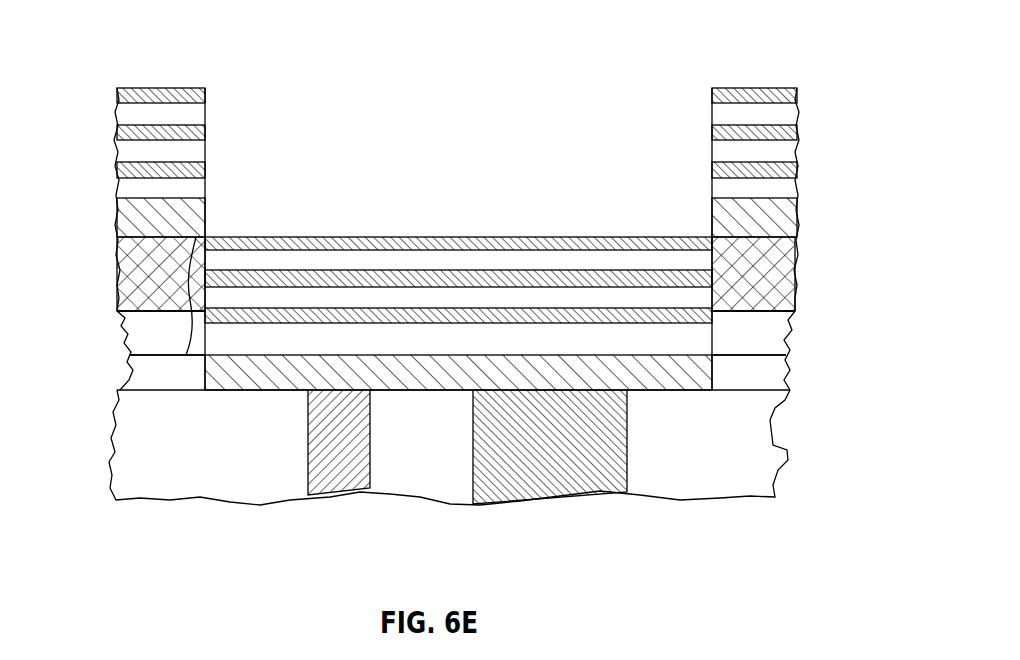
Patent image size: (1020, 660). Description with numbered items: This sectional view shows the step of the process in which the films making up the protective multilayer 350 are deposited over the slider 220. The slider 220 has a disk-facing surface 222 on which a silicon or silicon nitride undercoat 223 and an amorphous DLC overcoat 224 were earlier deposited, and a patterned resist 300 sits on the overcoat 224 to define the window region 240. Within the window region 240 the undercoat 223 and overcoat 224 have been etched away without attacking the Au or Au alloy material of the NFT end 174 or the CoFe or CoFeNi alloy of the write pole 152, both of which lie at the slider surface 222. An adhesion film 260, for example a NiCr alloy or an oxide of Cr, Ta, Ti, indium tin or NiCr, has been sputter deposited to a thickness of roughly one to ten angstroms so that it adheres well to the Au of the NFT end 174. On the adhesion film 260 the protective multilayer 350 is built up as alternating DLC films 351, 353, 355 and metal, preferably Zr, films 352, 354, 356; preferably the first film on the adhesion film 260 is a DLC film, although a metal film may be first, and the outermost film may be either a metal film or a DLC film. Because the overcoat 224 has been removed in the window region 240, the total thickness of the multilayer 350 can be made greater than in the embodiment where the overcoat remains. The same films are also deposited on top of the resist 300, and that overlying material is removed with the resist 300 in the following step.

The window region 240 is at (712, 77).
The metal film 356 is at (118, 95).
The metal film 354 is at (118, 133).
The metal film 352 is at (118, 170).
The DLC film 355 is at (793, 110).
The DLC film 353 is at (793, 148).
The DLC film 351 is at (793, 185).
The protective multilayer 350 is at (180, 296).
The adhesion film 260 is at (125, 218).
The resist 300 is at (120, 270).
The overcoat 224 is at (130, 330).
The undercoat 223 is at (135, 375).
The surface 222 is at (793, 390).
The slider 220 is at (762, 487).
The NFT end 174 is at (322, 500).
The write pole 152 is at (600, 488).